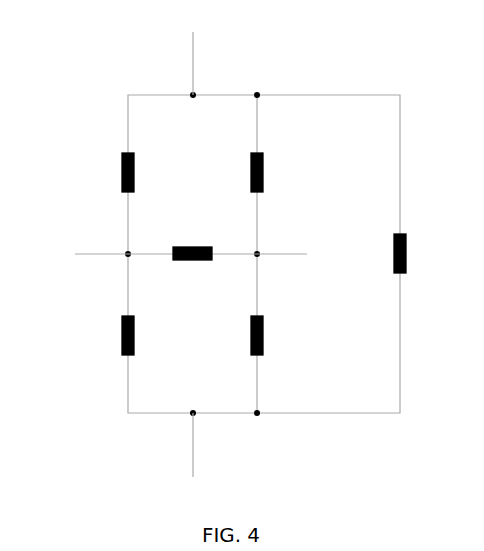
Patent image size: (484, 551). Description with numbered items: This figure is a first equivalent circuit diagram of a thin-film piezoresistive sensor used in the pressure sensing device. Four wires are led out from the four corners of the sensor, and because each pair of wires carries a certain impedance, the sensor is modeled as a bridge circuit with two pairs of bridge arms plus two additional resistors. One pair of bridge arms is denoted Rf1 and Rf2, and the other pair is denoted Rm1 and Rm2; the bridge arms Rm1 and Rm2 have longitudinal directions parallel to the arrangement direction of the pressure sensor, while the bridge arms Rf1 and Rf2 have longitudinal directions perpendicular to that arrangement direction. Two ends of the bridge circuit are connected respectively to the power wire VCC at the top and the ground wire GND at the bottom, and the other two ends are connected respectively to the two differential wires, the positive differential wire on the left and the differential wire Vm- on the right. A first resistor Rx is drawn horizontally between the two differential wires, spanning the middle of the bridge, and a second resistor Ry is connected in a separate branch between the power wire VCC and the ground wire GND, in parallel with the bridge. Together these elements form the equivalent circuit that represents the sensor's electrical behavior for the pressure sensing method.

The power wire VCC is at (197, 51).
The ground wire GND is at (201, 462).
The differential wire Vm- is at (305, 253).
The bridge arm Rf1 is at (109, 172).
The bridge arm Rm2 is at (280, 172).
The first resistor Rx is at (192, 241).
The second resistor Ry is at (414, 253).
The bridge arm Rm1 is at (105, 335).
The bridge arm Rf2 is at (282, 335).